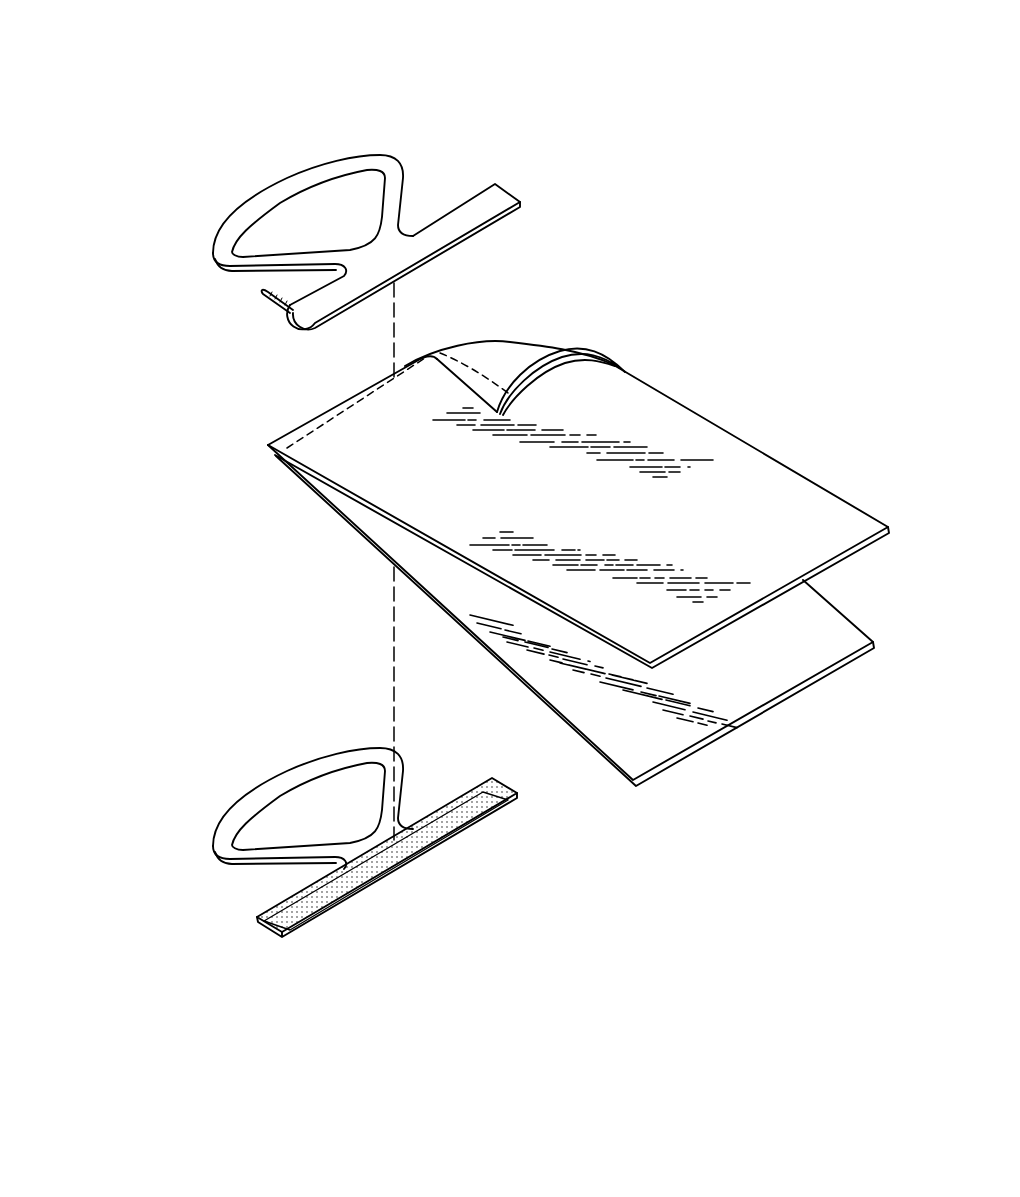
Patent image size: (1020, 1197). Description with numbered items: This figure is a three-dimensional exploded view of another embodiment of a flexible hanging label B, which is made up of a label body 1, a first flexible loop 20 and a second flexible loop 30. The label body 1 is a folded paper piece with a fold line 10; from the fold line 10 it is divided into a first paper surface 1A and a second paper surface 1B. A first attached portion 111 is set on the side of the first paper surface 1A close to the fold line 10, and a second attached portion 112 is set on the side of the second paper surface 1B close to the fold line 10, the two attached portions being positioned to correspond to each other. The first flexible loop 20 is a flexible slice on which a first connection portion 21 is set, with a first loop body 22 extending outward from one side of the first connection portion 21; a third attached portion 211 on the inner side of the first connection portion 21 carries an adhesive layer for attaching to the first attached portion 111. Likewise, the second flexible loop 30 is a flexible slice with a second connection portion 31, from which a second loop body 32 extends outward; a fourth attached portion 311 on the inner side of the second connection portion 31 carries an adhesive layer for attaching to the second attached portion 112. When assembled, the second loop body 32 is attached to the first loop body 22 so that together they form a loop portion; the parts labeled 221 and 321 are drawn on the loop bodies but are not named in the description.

The label body 1 is at (737, 418).
The first paper surface 1A is at (393, 482).
The second paper surface 1B is at (522, 356).
The fold line 10 is at (337, 403).
The first attached portion 111 is at (318, 422).
The second attached portion 112 is at (467, 373).
The flexible hanging label B is at (697, 318).
The first flexible loop 20 is at (414, 168).
The first connection portion 21 is at (478, 205).
The third attached portion 211 is at (275, 305).
The first loop body 22 is at (289, 176).
The arm of loop 221 is at (244, 271).
The second flexible loop 30 is at (223, 882).
The second connection portion 31 is at (262, 903).
The fourth attached portion 311 is at (390, 873).
The second loop body 32 is at (286, 778).
The arm of second loop 321 is at (221, 838).